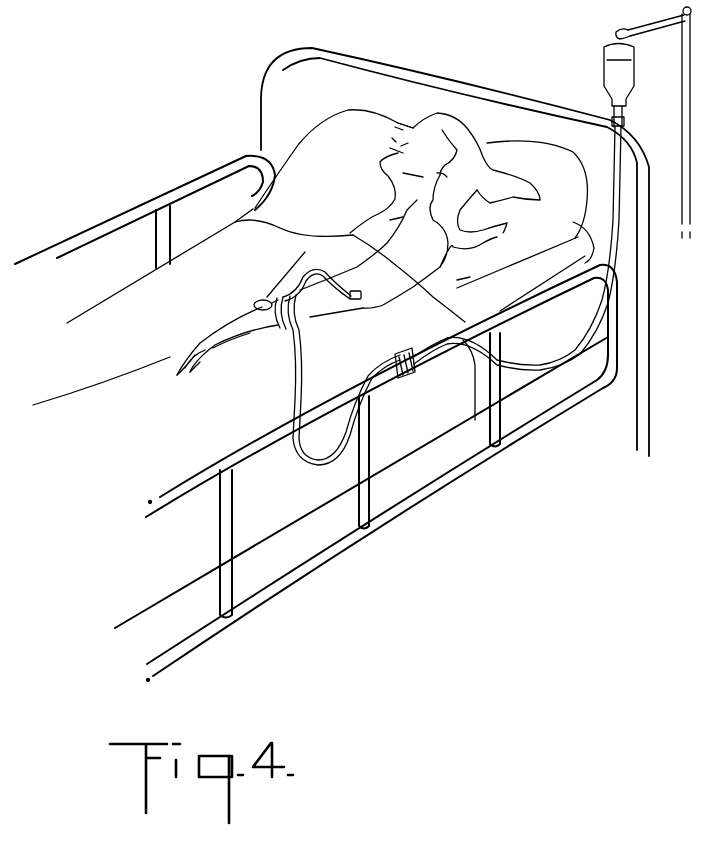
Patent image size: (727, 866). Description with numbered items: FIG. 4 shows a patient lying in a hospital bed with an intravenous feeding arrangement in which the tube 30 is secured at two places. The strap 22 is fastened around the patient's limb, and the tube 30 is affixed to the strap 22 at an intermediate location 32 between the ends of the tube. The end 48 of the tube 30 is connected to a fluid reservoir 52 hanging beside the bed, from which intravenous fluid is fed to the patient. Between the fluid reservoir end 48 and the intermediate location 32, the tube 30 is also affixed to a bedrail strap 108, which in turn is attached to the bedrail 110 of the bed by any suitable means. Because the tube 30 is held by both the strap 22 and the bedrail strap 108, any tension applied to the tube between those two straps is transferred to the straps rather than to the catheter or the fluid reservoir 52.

The strap 22 is at (290, 333).
The tube 30 is at (611, 158).
The intermediate location 32 is at (270, 300).
The end of tube 48 is at (624, 130).
The fluid reservoir 52 is at (602, 62).
The bedrail strap 108 is at (401, 353).
The bedrail 110 is at (257, 450).